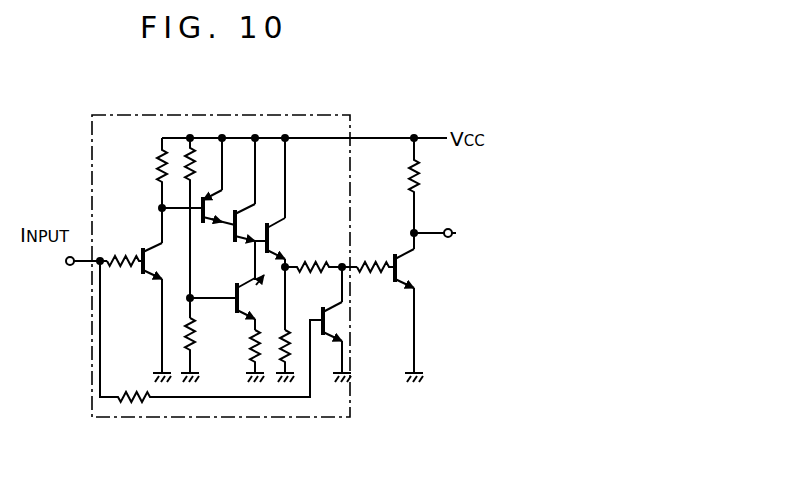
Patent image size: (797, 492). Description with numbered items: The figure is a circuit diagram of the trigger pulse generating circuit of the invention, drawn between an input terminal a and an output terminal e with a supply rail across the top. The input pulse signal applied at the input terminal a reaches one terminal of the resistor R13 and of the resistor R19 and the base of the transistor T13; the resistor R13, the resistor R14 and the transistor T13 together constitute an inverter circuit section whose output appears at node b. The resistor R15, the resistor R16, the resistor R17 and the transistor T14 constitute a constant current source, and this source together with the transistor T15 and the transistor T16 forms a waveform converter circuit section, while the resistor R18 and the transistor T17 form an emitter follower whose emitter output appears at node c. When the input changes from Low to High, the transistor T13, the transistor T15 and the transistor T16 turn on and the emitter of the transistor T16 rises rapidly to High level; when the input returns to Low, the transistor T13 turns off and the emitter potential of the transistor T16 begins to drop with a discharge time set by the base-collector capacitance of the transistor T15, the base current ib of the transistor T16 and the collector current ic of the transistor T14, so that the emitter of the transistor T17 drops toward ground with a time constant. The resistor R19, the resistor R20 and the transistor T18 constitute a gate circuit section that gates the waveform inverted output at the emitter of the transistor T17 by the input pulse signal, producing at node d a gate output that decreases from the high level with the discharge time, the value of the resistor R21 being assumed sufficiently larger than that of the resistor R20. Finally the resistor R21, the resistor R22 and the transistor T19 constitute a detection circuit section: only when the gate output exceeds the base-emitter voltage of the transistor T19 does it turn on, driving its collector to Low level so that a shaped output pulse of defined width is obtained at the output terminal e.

The resistor R13 is at (112, 257).
The resistor R14 is at (160, 176).
The resistor R15 is at (197, 160).
The resistor R16 is at (192, 332).
The resistor R17 is at (254, 350).
The resistor R18 is at (288, 365).
The resistor R19 is at (138, 396).
The resistor R20 is at (310, 262).
The resistor R21 is at (360, 266).
The resistor R22 is at (418, 178).
The transistor T13 is at (146, 262).
The transistor T14 is at (236, 290).
The transistor T15 is at (209, 206).
The transistor T16 is at (248, 215).
The transistor T17 is at (282, 250).
The transistor T18 is at (336, 330).
The transistor T19 is at (404, 272).
The input terminal a is at (66, 261).
The waveform converter node b is at (158, 208).
The emitter follower output node c is at (287, 270).
The gate output node d is at (340, 272).
The output terminal e is at (457, 224).
The base current ib is at (213, 236).
The collector current ic is at (267, 295).